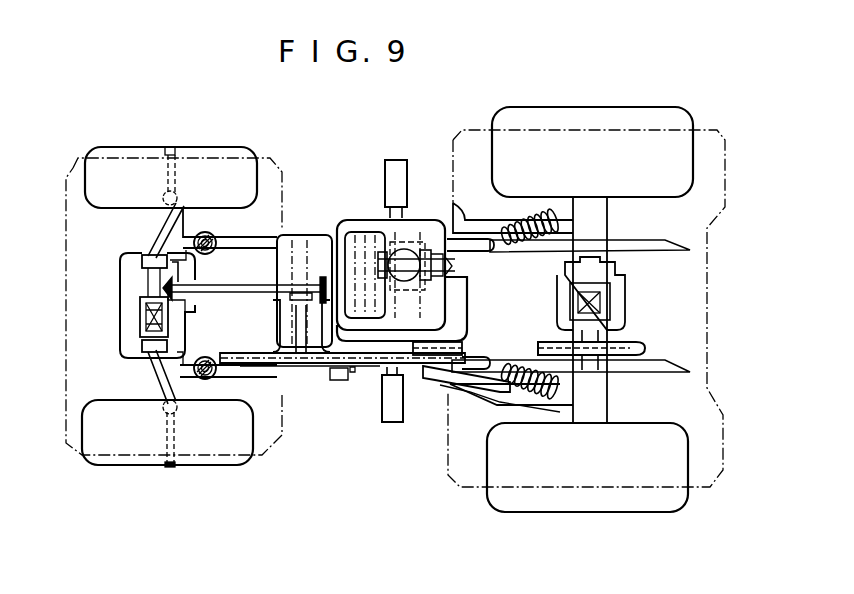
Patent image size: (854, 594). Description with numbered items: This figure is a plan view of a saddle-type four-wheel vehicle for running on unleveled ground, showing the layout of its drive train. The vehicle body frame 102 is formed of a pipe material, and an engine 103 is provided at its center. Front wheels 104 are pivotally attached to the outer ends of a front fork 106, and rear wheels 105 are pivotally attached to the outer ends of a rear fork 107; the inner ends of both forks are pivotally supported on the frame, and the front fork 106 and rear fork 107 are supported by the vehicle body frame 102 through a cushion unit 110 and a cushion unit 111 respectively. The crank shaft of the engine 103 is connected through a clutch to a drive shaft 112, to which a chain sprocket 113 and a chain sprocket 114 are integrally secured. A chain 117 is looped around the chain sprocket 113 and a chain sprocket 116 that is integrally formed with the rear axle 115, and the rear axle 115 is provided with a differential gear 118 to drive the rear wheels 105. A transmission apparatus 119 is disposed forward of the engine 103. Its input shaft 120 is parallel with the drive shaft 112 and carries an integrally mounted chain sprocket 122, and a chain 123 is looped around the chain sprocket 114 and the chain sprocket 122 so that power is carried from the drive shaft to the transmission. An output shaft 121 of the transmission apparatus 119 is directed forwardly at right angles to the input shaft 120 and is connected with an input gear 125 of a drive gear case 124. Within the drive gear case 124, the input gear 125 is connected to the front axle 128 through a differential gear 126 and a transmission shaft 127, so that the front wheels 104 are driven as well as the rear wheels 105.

The vehicle body frame 102 is at (232, 355).
The engine 103 is at (353, 270).
The front wheels 104 is at (207, 452).
The rear wheels 105 is at (562, 498).
The front fork 106 is at (265, 240).
The rear fork 107 is at (490, 387).
The cushion unit 110 is at (210, 233).
The cushion unit 111 is at (535, 222).
The drive shaft 112 is at (448, 342).
The chain sprocket 113 is at (374, 372).
The chain sprocket 114 is at (412, 380).
The rear axle 115 is at (600, 336).
The chain sprocket 116 is at (635, 342).
The chain 117 is at (520, 346).
The differential gear 118 is at (620, 277).
The transmission apparatus 119 is at (288, 245).
The input shaft 120 is at (300, 330).
The output shaft 121 is at (238, 295).
The chain sprocket 122 is at (300, 358).
The chain 123 is at (340, 378).
The drive gear case 124 is at (121, 278).
The input gear 125 is at (179, 268).
The differential gear 126 is at (140, 310).
The transmission shaft 127 is at (158, 240).
The front axle 128 is at (172, 147).